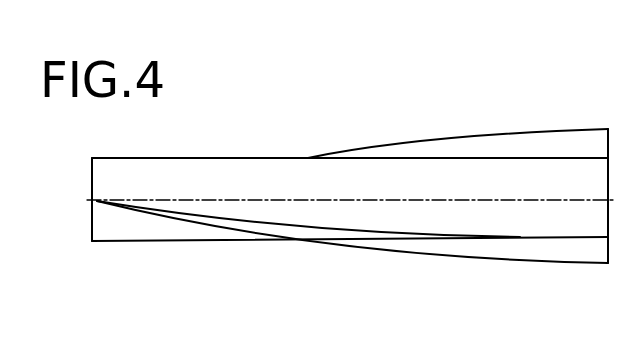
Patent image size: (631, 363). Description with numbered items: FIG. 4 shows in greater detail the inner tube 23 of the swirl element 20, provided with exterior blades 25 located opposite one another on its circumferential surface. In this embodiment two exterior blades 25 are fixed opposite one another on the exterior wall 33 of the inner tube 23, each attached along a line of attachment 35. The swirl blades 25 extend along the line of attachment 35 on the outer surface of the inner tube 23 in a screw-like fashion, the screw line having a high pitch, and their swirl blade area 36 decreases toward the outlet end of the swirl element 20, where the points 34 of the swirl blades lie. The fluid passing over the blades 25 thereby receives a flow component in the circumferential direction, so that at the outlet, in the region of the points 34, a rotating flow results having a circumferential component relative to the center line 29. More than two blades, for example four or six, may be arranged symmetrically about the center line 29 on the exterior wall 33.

The swirl element 20 is at (352, 118).
The inner tube 23 is at (222, 180).
The exterior blades 25 is at (542, 147).
The center line 29 is at (307, 200).
The exterior wall 33 is at (112, 189).
The points of the swirl blades 34 is at (98, 201).
The line of attachment 35 is at (428, 236).
The swirl blade area 36 is at (262, 225).